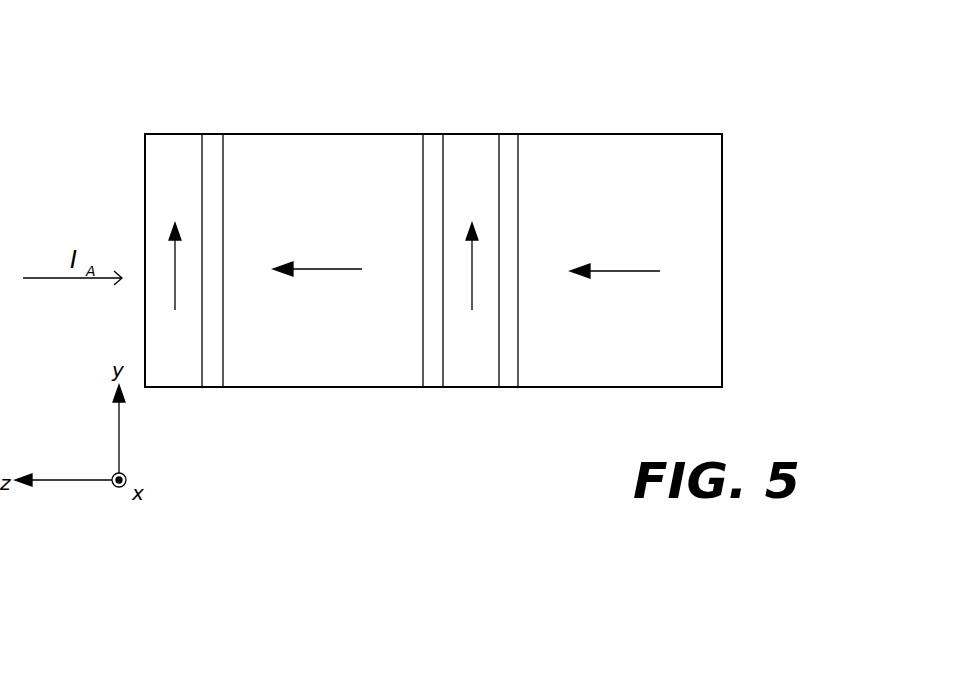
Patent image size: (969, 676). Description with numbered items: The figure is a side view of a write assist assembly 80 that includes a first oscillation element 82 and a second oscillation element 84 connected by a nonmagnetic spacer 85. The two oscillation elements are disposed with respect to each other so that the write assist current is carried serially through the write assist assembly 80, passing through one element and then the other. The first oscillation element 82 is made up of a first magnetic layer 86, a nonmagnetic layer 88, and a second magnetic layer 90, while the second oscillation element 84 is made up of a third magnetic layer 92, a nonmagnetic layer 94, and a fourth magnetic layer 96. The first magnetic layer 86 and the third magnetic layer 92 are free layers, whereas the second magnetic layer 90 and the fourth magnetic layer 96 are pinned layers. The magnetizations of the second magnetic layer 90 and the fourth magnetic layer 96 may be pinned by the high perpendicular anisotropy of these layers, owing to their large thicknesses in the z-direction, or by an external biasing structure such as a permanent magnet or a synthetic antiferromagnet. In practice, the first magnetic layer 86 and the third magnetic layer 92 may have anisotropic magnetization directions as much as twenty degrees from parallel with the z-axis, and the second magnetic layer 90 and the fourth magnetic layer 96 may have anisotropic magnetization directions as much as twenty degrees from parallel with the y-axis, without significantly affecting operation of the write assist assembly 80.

The write assist assembly 80 is at (743, 158).
The first oscillation element 82 is at (147, 125).
The second oscillation element 84 is at (443, 125).
The nonmagnetic spacer 85 is at (429, 377).
The first magnetic layer 86 is at (155, 182).
The nonmagnetic layer 88 is at (211, 380).
The second magnetic layer 90 is at (358, 378).
The third magnetic layer 92 is at (462, 380).
The nonmagnetic layer 94 is at (511, 387).
The fourth magnetic layer 96 is at (707, 295).